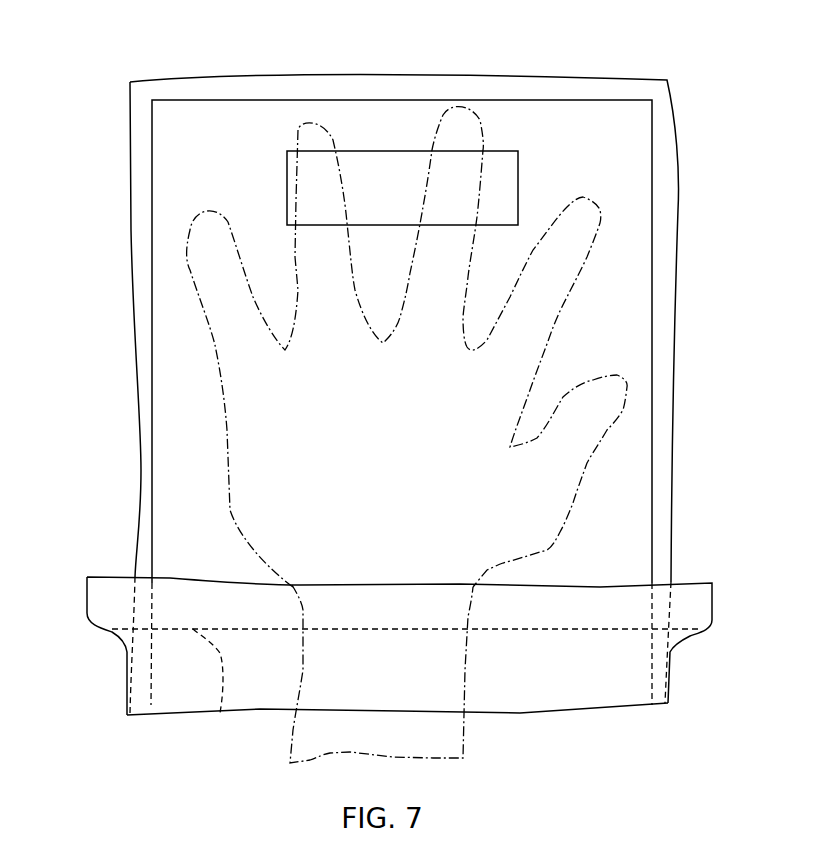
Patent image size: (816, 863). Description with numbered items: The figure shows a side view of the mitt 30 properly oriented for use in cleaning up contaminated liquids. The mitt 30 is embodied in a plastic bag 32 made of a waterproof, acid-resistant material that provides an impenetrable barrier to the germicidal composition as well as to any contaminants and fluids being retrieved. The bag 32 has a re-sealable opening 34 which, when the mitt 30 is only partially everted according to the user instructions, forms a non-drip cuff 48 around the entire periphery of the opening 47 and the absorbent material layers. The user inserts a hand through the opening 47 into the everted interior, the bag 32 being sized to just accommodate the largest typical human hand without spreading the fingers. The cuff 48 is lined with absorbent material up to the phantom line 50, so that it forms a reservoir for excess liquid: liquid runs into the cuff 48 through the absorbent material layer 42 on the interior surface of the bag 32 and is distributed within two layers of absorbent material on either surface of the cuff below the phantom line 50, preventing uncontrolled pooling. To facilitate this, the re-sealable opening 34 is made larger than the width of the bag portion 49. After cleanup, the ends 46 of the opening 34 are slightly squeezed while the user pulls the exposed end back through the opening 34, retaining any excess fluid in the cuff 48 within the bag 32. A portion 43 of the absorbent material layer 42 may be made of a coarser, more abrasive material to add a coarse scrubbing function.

The mitt 30 is at (401, 393).
The plastic bag 32 is at (675, 240).
The re-sealable opening 34 is at (678, 579).
The absorbent material layer 42 is at (640, 422).
The portion of absorbent material layer 43 is at (398, 175).
The ends of opening 46 is at (712, 600).
The opening 47 is at (562, 727).
The non-drip cuff 48 is at (685, 652).
The bag portion 49 is at (112, 268).
The phantom line 50 is at (220, 713).